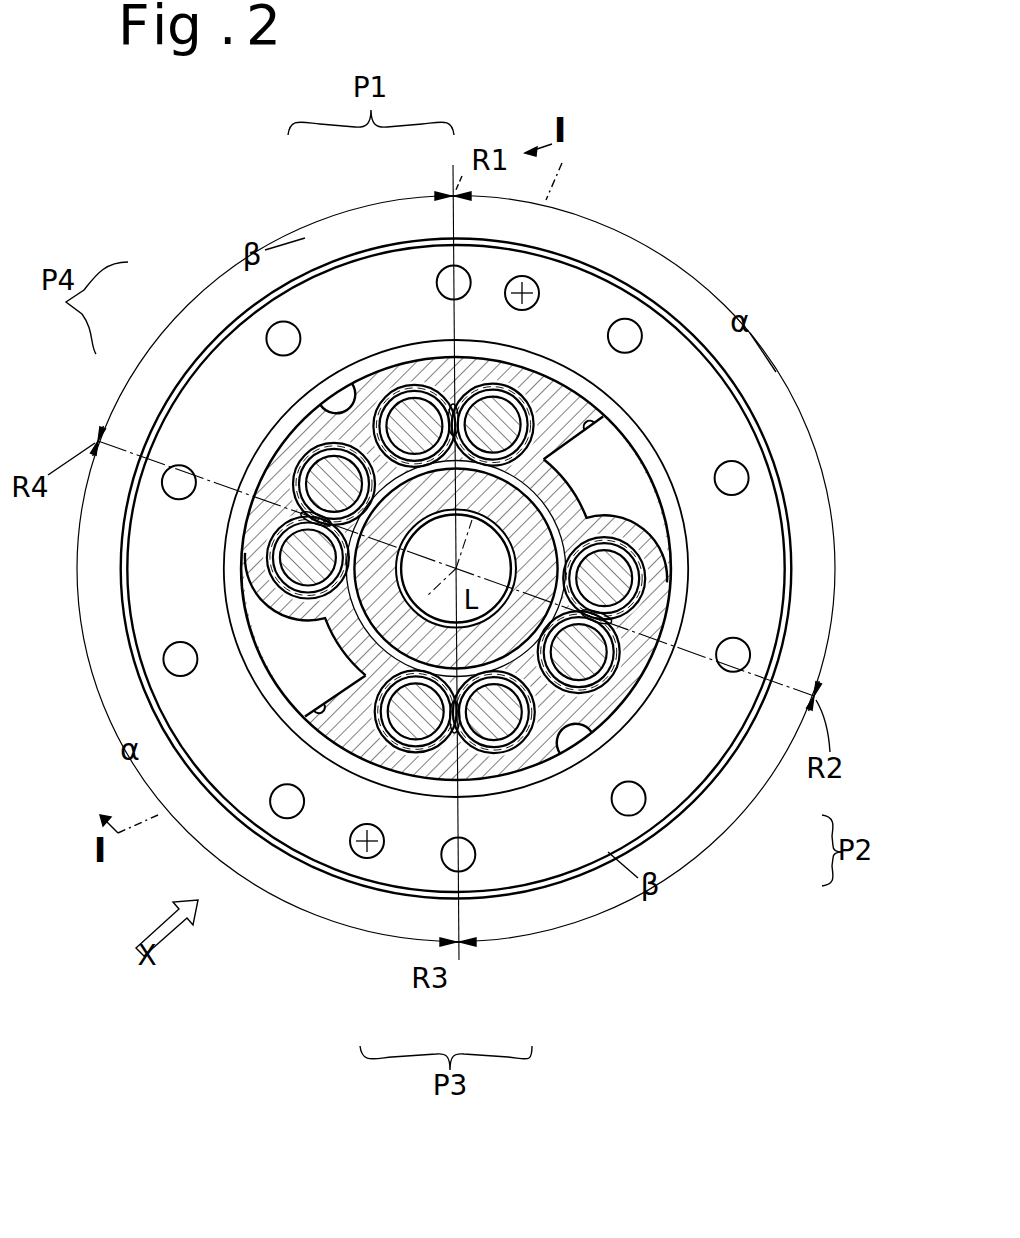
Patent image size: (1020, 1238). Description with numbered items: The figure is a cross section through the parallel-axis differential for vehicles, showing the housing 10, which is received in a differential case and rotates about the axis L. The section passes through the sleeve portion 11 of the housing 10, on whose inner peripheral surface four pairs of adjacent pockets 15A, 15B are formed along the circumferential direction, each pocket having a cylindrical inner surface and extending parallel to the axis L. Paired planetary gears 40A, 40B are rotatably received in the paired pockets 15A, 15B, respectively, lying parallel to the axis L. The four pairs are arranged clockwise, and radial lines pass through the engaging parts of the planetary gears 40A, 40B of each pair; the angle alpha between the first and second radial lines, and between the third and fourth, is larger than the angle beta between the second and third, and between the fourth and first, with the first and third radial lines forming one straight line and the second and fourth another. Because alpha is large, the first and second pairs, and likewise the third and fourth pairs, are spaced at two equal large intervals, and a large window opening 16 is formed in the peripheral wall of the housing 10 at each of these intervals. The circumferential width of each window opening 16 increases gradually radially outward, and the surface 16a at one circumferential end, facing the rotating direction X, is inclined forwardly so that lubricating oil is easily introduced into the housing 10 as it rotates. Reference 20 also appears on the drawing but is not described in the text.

The housing 10 is at (673, 261).
The sleeve portion 11 is at (646, 290).
The pocket 15A is at (385, 399).
The pocket 15B is at (516, 404).
The window opening 16 is at (615, 480).
The surface 16a is at (593, 425).
The annular ring 20 is at (615, 478).
The planetary gear 40A is at (390, 397).
The planetary gear 40B is at (467, 385).